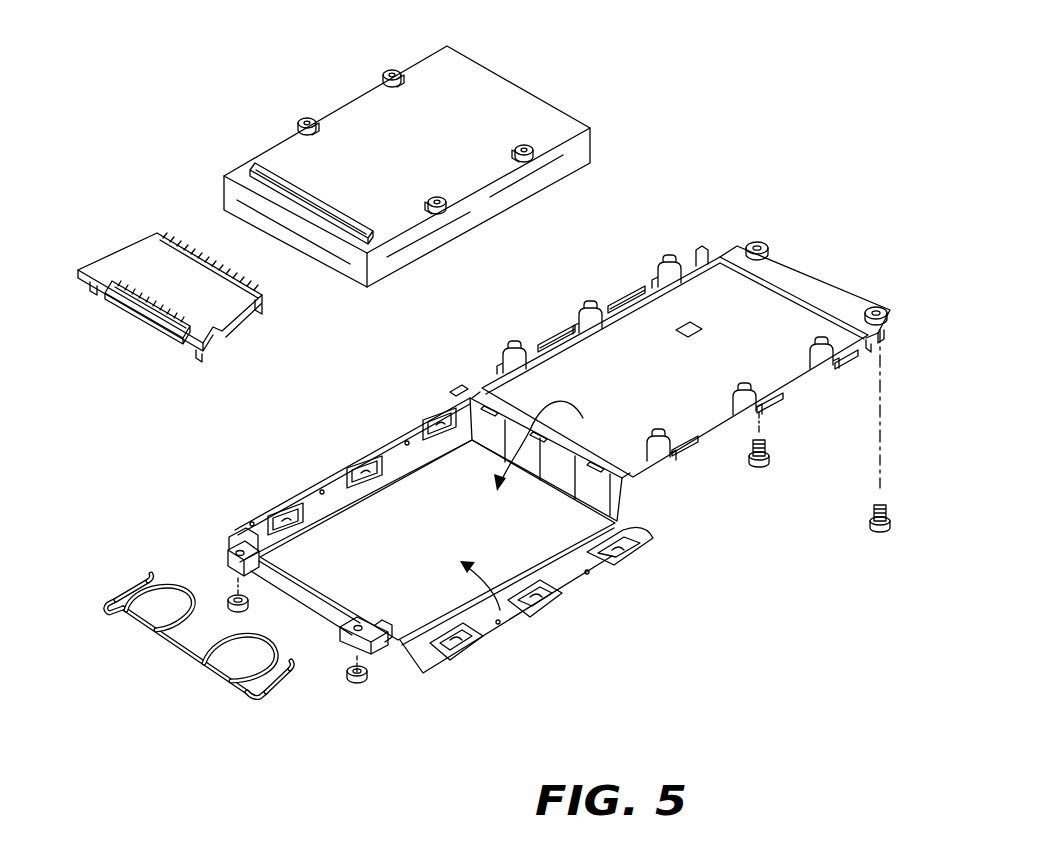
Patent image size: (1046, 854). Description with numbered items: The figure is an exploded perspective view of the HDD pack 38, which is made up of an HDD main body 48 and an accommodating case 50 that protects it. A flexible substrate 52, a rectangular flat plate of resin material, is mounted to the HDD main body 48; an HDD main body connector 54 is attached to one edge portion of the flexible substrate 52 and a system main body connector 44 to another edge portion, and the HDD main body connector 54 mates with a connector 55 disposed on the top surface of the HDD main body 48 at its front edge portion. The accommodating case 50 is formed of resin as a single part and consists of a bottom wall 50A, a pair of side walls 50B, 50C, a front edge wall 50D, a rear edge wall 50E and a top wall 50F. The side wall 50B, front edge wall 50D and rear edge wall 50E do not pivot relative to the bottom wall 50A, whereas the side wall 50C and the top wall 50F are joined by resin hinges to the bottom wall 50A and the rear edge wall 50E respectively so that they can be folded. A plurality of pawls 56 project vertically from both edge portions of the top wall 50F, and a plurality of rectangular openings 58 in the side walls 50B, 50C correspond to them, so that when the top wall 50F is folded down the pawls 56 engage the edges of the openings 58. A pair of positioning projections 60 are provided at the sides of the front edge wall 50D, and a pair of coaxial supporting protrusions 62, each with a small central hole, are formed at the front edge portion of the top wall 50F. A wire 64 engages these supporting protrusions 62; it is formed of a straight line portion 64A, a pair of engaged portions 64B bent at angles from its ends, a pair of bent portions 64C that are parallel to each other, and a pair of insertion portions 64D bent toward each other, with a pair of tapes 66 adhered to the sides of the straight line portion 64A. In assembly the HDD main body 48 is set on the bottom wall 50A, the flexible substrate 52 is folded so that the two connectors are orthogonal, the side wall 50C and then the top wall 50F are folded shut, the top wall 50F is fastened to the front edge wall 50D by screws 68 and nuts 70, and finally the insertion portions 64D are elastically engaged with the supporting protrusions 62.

The HDD pack 38 is at (675, 177).
The HDD main body 48 is at (533, 63).
The connector 55 is at (325, 216).
The flexible substrate 52 is at (131, 256).
The HDD main body connector 54 is at (264, 304).
The system main body connector 44 is at (148, 323).
The accommodating case 50 is at (808, 243).
The bottom wall 50A is at (400, 493).
The side wall 50B is at (333, 481).
The side wall 50C is at (576, 609).
The front edge wall 50D is at (336, 622).
The rear edge wall 50E is at (628, 481).
The top wall 50F is at (818, 320).
The pawls 56 is at (665, 262).
The rectangular openings 58 is at (437, 425).
The positioning projections 60 is at (381, 654).
The supporting protrusions 62 is at (703, 250).
The wire 64 is at (90, 613).
The straight line portion 64A is at (178, 648).
The engaged portions 64B is at (110, 624).
The bent portions 64C is at (105, 603).
The insertion portions 64D is at (148, 580).
The tapes 66 is at (173, 592).
The screws 68 is at (762, 468).
The nuts 70 is at (229, 598).